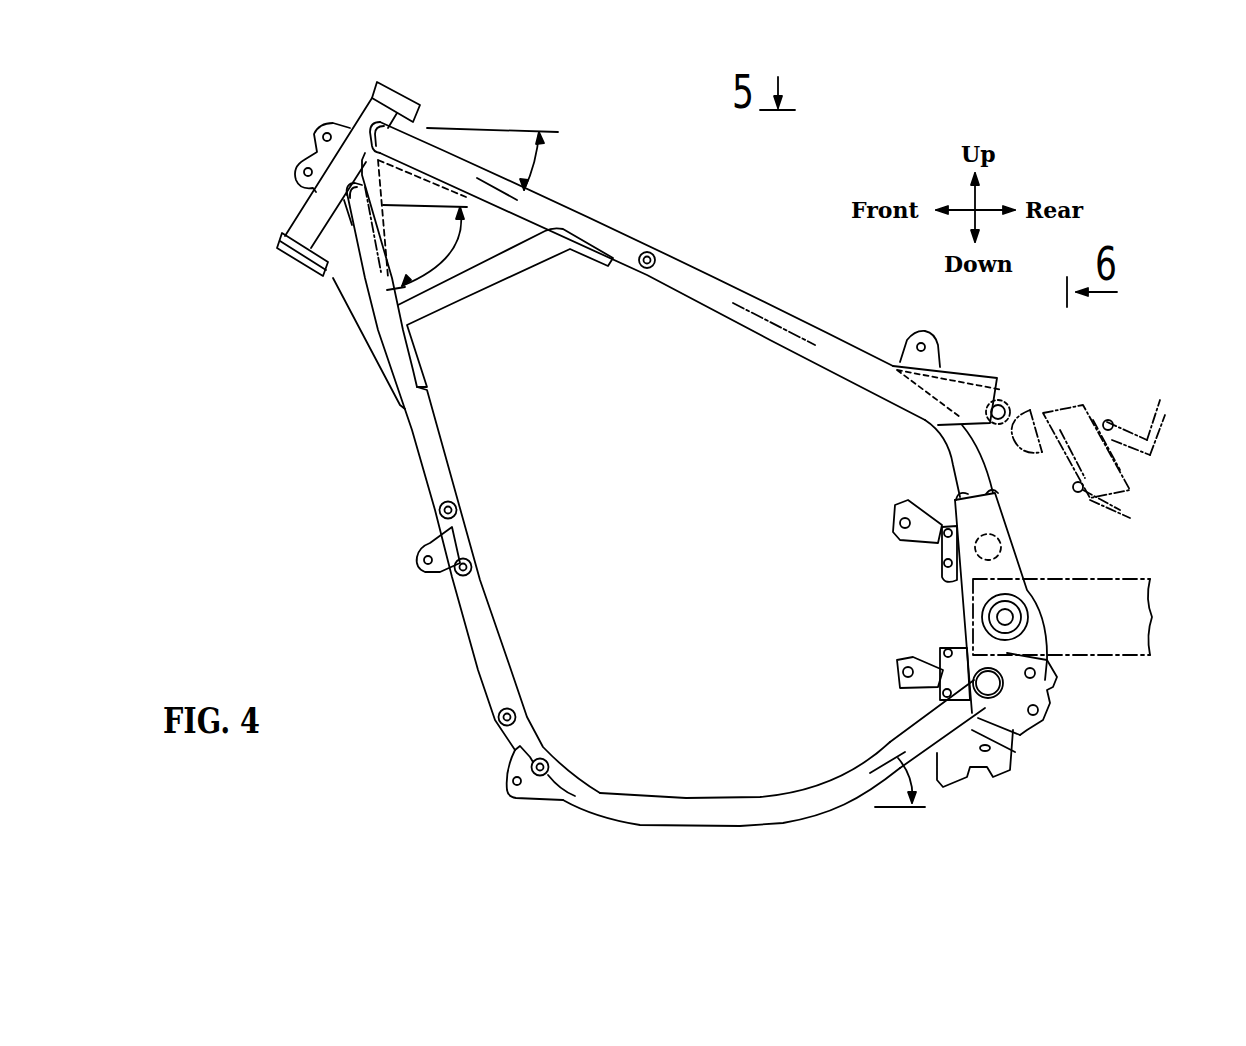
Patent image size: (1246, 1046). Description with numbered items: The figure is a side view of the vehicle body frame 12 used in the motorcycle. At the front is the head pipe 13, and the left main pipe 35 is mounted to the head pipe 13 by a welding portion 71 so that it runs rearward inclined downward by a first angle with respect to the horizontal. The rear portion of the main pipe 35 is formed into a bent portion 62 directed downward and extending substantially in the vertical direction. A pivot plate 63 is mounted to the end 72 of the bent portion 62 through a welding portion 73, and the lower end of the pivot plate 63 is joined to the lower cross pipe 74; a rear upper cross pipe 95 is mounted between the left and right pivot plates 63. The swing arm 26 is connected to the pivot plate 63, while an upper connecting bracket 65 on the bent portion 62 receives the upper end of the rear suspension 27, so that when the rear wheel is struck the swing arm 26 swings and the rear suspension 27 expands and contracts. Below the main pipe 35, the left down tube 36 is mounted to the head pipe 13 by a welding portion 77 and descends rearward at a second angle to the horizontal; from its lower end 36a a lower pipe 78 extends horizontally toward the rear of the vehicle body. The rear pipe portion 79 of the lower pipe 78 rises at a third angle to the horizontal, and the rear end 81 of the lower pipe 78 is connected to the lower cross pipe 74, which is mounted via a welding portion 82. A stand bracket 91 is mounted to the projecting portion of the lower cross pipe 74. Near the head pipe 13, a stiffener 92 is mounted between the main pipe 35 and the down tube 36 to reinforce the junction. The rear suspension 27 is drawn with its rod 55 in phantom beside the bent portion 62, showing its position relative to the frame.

The vehicle body frame 12 is at (590, 172).
The head pipe 13 is at (347, 163).
The swing arm 26 is at (1165, 575).
The rear suspension 27 is at (1110, 405).
The main pipe 35 is at (623, 233).
The down tube 36 is at (460, 612).
The lower end of the down tube 36a is at (565, 762).
The cushion rod 55 is at (1152, 417).
The bent portion 62 is at (937, 447).
The pivot plate 63 is at (942, 553).
The upper connecting bracket 65 is at (968, 377).
The welding portion 71 is at (385, 122).
The end of the bent portion 72 is at (953, 480).
The welding portion 73 is at (990, 480).
The lower cross pipe 74 is at (958, 642).
The welding portion 77 is at (335, 198).
The lower pipe 78 is at (692, 795).
The rear pipe portion 79 is at (883, 750).
The rear end of the lower pipe 81 is at (1018, 730).
The welding portion 82 is at (937, 710).
The stand bracket 91 is at (983, 767).
The stiffener 92 is at (520, 273).
The rear upper cross pipe 95 is at (1003, 547).